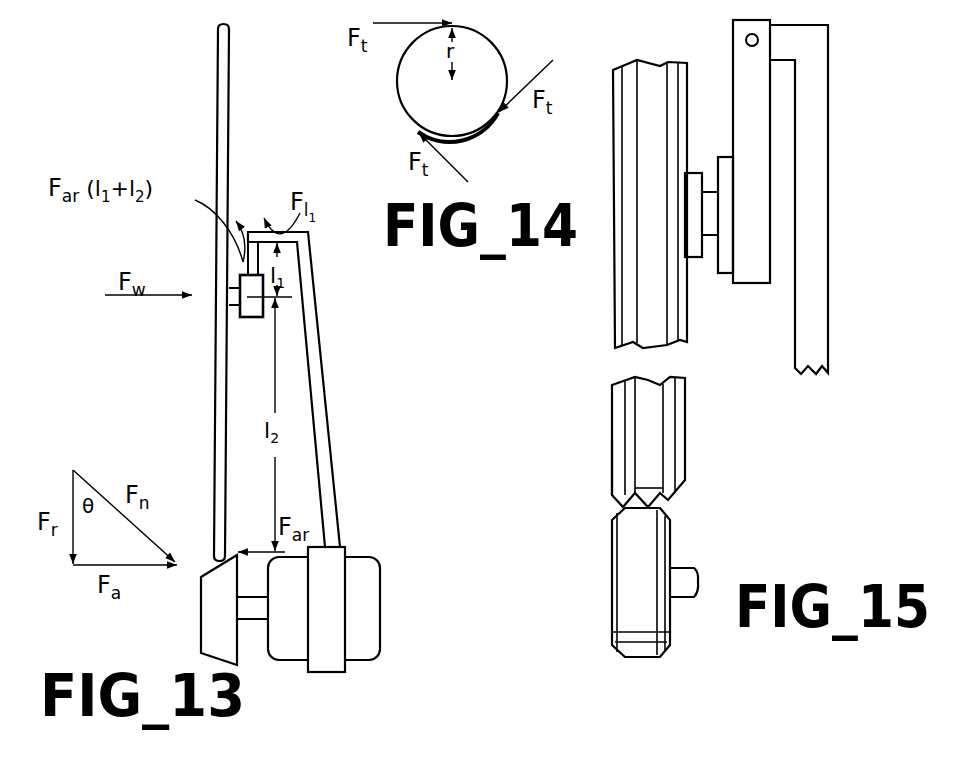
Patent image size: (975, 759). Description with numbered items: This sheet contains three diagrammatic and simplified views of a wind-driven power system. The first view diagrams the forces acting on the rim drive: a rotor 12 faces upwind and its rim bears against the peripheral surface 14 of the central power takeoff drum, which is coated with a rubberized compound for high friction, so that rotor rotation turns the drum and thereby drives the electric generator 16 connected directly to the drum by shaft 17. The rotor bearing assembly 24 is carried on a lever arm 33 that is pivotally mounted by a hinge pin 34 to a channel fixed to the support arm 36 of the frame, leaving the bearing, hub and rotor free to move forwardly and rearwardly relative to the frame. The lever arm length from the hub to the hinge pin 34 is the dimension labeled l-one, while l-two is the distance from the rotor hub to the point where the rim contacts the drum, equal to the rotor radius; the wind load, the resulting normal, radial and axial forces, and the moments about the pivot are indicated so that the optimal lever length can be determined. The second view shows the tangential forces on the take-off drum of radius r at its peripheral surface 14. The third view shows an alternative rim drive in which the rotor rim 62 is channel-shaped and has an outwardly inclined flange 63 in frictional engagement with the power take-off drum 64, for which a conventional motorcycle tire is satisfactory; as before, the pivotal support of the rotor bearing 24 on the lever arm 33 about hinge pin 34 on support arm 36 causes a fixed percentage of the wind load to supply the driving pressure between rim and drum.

In FIG. 13, the rotor 12 is at (212, 405).
In FIG. 13, the peripheral surface of the power takeoff drum 14 is at (215, 628).
In FIG. 14, the peripheral surface of the power takeoff drum 14 is at (485, 58).
In FIG. 15, the peripheral surface of the power takeoff drum 14 is at (650, 204).
In FIG. 13, the electric generator 16 is at (362, 573).
In FIG. 15, the shaft 17 is at (685, 598).
In FIG. 15, the rotor bearing assembly 24 is at (725, 263).
In FIG. 13, the lever arm 33 is at (248, 265).
In FIG. 15, the lever arm 33 is at (757, 110).
In FIG. 13, the hinge pin 34 is at (253, 231).
In FIG. 15, the hinge pin 34 is at (745, 38).
In FIG. 13, the support arm 36 is at (322, 364).
In FIG. 15, the support arm 36 is at (815, 333).
In FIG. 15, the rotor rim 62 is at (687, 407).
In FIG. 15, the outwardly inclined flange 63 is at (625, 455).
In FIG. 15, the power take-off drum 64 is at (646, 543).